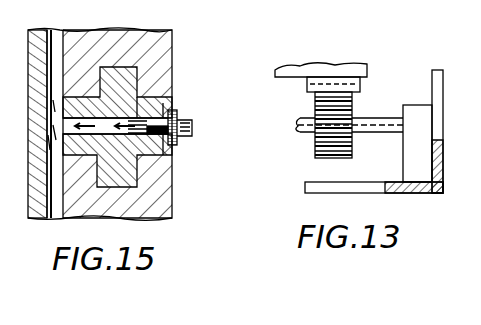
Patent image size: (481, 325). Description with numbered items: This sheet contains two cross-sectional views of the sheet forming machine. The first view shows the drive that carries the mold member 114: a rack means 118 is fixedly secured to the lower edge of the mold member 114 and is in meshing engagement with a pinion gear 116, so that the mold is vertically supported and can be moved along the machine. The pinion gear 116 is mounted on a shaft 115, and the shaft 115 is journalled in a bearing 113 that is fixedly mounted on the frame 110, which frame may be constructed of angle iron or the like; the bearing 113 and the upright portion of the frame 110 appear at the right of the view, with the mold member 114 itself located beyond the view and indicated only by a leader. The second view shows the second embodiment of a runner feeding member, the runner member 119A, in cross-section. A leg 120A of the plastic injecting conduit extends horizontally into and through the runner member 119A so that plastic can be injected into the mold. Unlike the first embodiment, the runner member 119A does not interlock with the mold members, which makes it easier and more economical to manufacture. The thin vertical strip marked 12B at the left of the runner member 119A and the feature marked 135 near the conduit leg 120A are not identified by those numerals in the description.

In FIG. 15, the strip 12B is at (60, 31).
In FIG. 15, the runner member 119A is at (125, 67).
In FIG. 15, the pin 135 is at (138, 118).
In FIG. 15, the leg of plastic injecting conduit 120A is at (176, 144).
In FIG. 13, the rack means 118 is at (360, 80).
In FIG. 13, the pinion gears 116 is at (343, 107).
In FIG. 13, the shaft 115 is at (367, 130).
In FIG. 13, the bearing 113 is at (413, 165).
In FIG. 13, the frame 110 is at (470, 62).
In FIG. 13, the mold member 114 is at (480, 226).